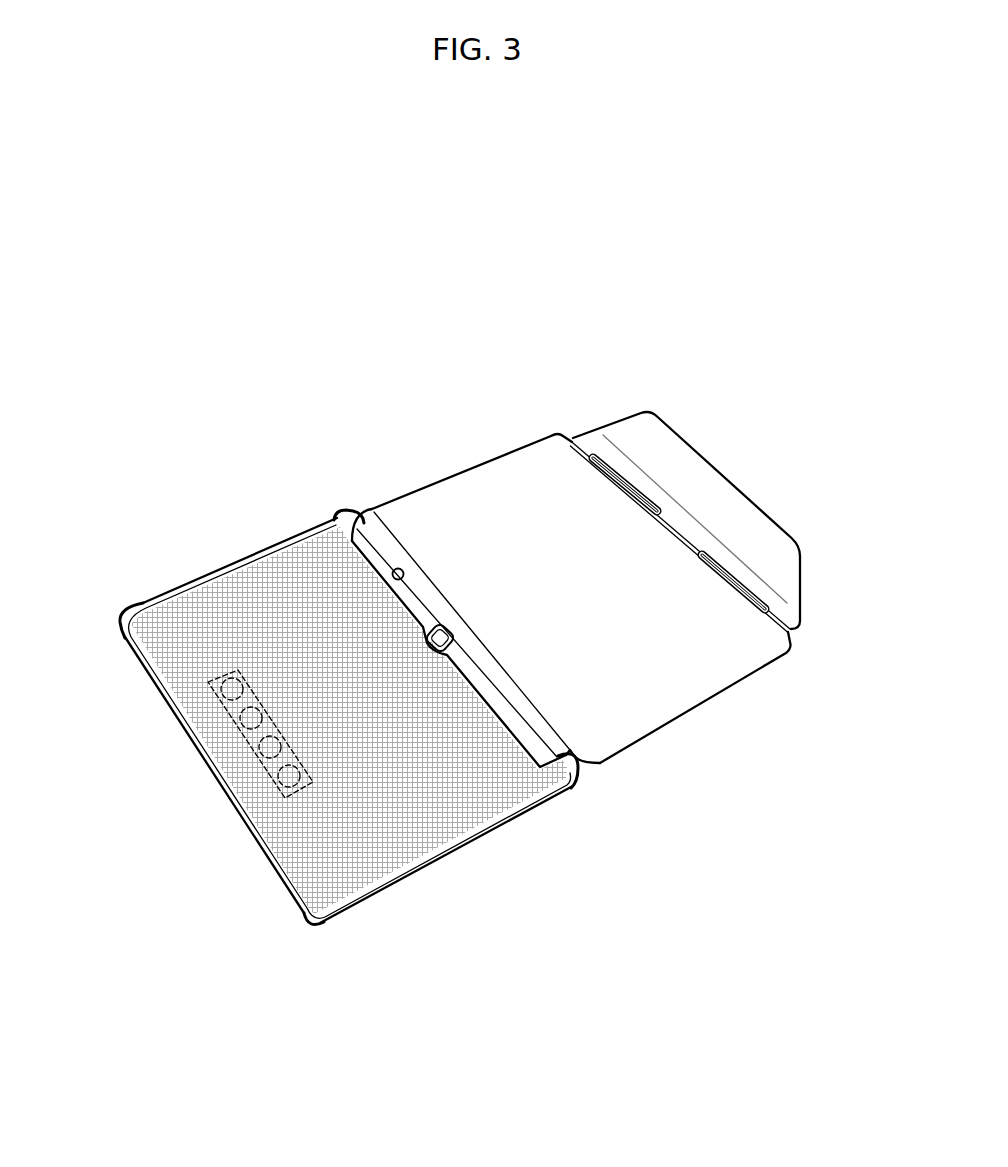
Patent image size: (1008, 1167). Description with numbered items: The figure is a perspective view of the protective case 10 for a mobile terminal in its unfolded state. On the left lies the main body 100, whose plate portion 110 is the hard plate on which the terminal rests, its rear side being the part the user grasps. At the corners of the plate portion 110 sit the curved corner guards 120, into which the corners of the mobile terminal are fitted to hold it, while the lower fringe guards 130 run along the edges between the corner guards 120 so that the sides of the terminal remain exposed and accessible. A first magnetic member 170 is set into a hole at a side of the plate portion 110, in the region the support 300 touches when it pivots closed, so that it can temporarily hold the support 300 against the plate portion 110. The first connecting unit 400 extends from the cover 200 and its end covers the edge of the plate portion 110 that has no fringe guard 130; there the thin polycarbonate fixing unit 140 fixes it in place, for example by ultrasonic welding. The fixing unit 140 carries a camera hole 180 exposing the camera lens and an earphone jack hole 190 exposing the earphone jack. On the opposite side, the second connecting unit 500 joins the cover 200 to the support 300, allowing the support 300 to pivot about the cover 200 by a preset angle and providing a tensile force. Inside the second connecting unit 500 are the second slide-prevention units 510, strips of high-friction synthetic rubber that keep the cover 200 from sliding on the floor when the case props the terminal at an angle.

The protective case 10 is at (622, 324).
The main body 100 is at (356, 727).
The plate portion 110 is at (370, 873).
The corner guards 120 is at (343, 507).
The fringe guards 130 is at (231, 553).
The fixing unit 140 is at (490, 695).
The first magnetic member 170 is at (266, 785).
The camera hole 180 is at (443, 628).
The earphone jack hole 190 is at (398, 568).
The cover 200 is at (704, 716).
The support 300 is at (804, 580).
The first connecting unit 400 is at (553, 735).
The second connecting unit 500 is at (795, 638).
The second slide-prevention units 510 is at (619, 461).